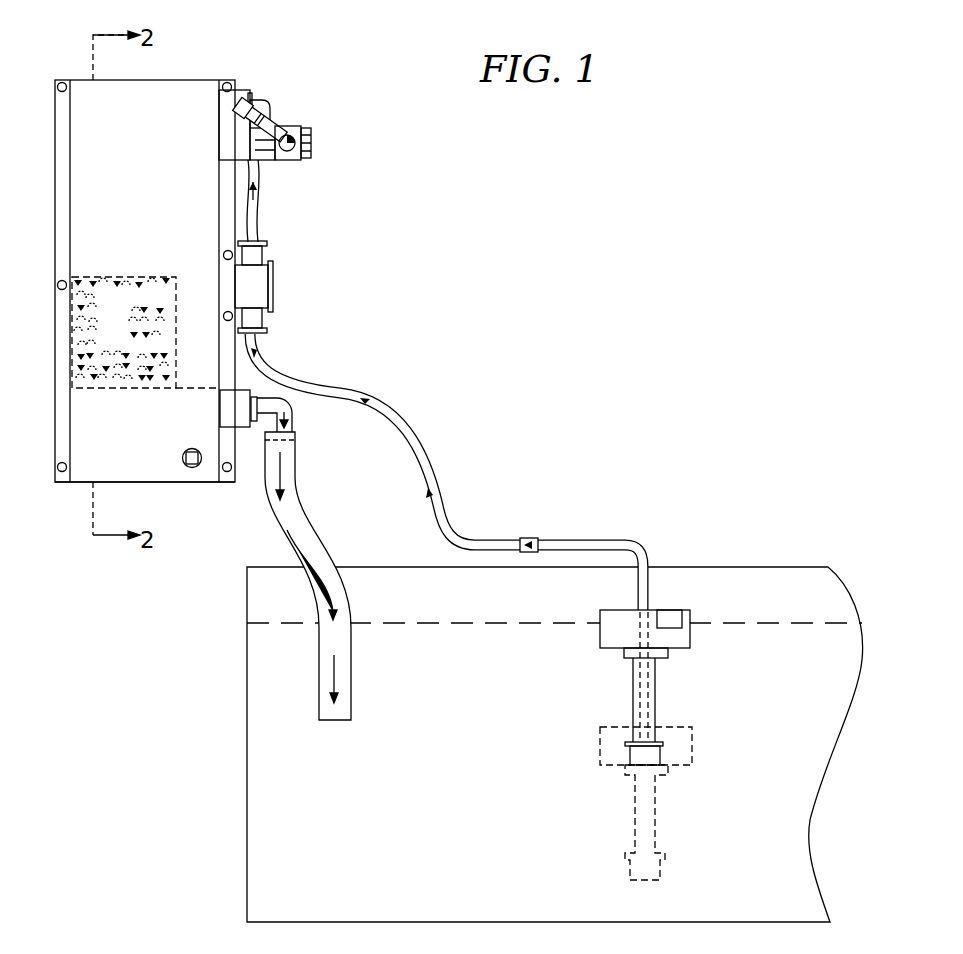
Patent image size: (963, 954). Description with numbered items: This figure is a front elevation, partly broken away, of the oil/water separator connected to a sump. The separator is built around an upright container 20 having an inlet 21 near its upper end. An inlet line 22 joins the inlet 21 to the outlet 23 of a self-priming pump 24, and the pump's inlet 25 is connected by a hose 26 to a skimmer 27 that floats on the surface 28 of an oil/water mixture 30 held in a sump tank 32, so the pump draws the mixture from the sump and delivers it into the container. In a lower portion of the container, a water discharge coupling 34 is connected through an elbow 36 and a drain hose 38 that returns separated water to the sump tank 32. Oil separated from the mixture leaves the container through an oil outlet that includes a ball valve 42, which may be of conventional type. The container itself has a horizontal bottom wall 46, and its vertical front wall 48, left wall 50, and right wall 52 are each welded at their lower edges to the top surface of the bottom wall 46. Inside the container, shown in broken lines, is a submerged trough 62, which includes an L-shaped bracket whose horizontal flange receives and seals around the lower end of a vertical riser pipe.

The upright container 20 is at (188, 82).
The inlet 21 is at (240, 96).
The ball valve 42 is at (306, 130).
The horizontal bottom wall 46 is at (264, 168).
The inlet line 22 is at (263, 210).
The outlet 23 is at (266, 250).
The self-priming pump 24 is at (274, 288).
The inlet 25 is at (263, 319).
The hose 26 is at (422, 462).
The skimmer 27 is at (693, 610).
The surface 28 is at (770, 622).
The oil/water mixture 30 is at (478, 687).
The sump tank 32 is at (246, 735).
The water discharge coupling 34 is at (242, 466).
The elbow 36 is at (292, 420).
The drain hose 38 is at (312, 544).
The front wall 48 is at (74, 311).
The left wall 50 is at (70, 400).
The right wall 52 is at (226, 338).
The submerged trough 62 is at (212, 304).